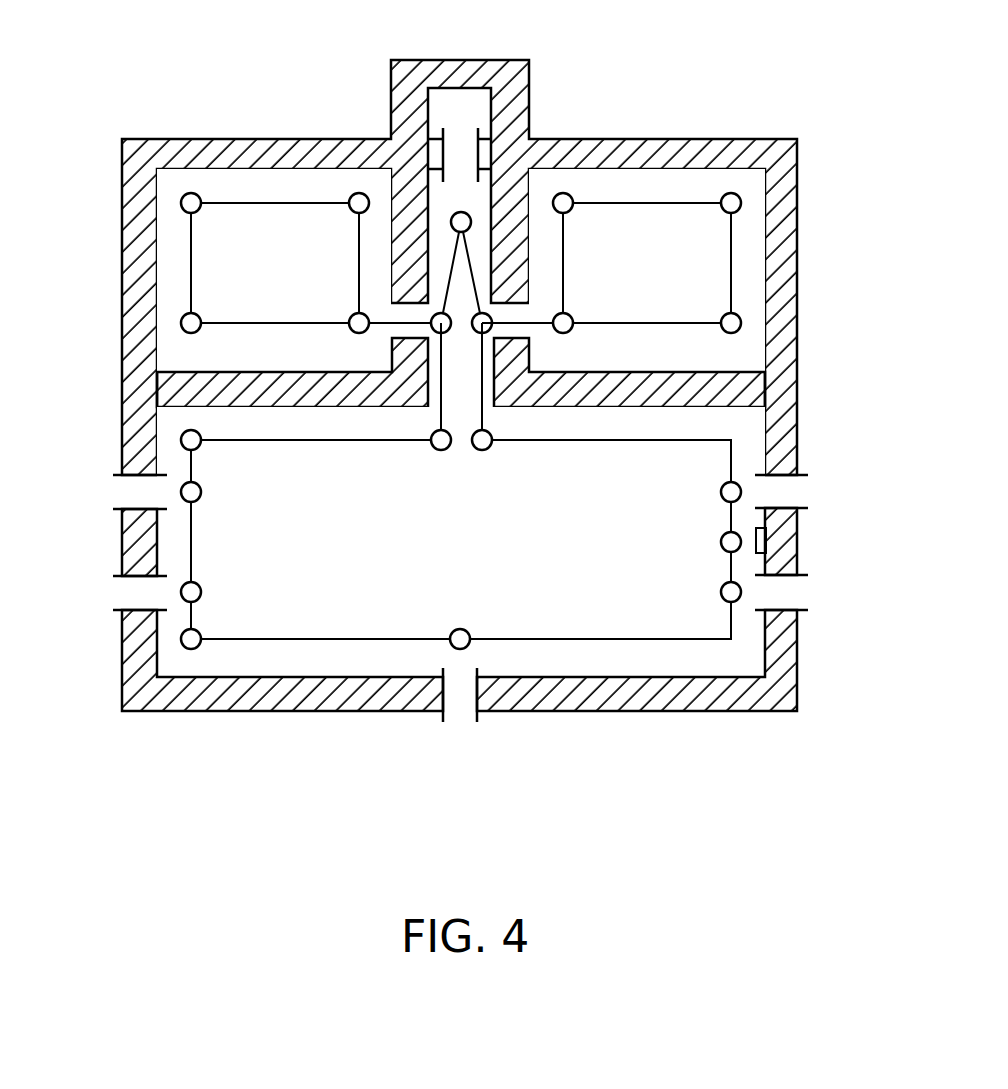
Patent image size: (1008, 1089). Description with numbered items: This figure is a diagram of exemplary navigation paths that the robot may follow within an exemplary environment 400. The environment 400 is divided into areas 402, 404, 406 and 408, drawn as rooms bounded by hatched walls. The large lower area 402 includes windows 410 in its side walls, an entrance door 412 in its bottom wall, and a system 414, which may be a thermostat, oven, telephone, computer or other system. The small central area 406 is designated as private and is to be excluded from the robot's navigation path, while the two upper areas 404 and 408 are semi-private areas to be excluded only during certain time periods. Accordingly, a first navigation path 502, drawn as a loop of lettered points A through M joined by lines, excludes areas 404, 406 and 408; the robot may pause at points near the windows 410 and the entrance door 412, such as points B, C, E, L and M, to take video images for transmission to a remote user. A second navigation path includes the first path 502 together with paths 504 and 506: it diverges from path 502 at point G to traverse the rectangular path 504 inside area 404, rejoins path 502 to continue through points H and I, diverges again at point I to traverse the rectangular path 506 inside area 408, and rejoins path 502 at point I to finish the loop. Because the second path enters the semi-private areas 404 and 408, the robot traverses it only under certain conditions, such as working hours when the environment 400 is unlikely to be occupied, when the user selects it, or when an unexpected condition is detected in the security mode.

The environment 400 is at (463, 462).
The area 402 is at (482, 552).
The area 404 is at (655, 188).
The area 406 is at (460, 112).
The area 408 is at (258, 188).
The windows 410 is at (132, 495).
The entrance door 412 is at (460, 727).
The system 414 is at (775, 540).
The first navigation path 502 is at (732, 452).
The path 504 is at (733, 265).
The path 506 is at (190, 250).